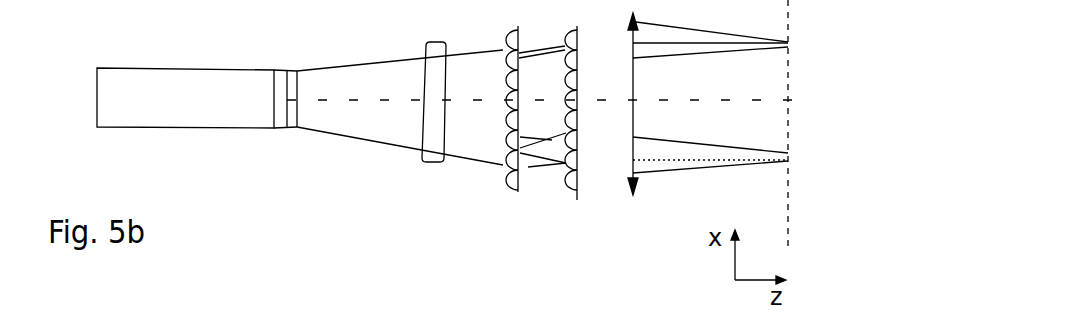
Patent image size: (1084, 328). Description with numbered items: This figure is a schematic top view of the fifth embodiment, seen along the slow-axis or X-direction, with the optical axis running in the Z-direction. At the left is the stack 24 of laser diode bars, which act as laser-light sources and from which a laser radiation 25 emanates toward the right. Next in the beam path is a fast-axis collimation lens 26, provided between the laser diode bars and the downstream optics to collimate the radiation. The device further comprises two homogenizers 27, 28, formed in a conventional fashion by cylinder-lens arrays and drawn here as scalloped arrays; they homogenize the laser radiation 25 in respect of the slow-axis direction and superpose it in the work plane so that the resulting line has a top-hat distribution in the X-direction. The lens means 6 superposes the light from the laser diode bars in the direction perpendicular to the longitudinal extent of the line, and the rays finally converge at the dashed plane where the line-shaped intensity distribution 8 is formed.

The stack of laser diode bars 24 is at (186, 112).
The laser radiation 25 is at (368, 112).
The fast-axis collimation lens 26 is at (434, 34).
The homogenizer 27 is at (515, 183).
The homogenizer 28 is at (568, 190).
The lens means 6 is at (634, 192).
The line-shaped intensity distribution 8 is at (790, 100).